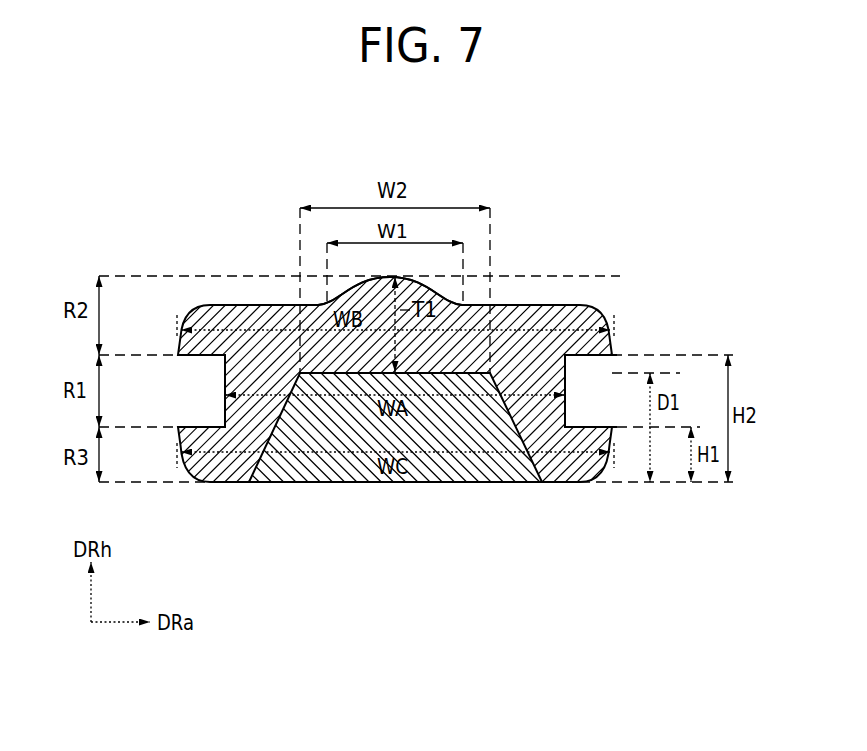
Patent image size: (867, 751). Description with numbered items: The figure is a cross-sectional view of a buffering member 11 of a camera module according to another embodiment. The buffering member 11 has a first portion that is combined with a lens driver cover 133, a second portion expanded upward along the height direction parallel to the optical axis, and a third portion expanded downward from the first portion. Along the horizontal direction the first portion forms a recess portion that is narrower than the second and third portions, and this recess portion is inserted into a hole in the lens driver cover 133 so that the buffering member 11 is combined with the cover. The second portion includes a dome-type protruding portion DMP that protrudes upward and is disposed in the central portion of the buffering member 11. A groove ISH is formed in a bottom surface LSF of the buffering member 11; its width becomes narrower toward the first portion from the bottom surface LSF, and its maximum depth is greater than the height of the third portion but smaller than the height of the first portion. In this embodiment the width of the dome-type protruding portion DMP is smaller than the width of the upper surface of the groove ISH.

The buffering member 11 is at (592, 277).
The lens driver cover 133 is at (617, 428).
The dome-type protruding portion DMP is at (410, 277).
The groove ISH is at (268, 444).
The bottom surface LSF is at (230, 483).